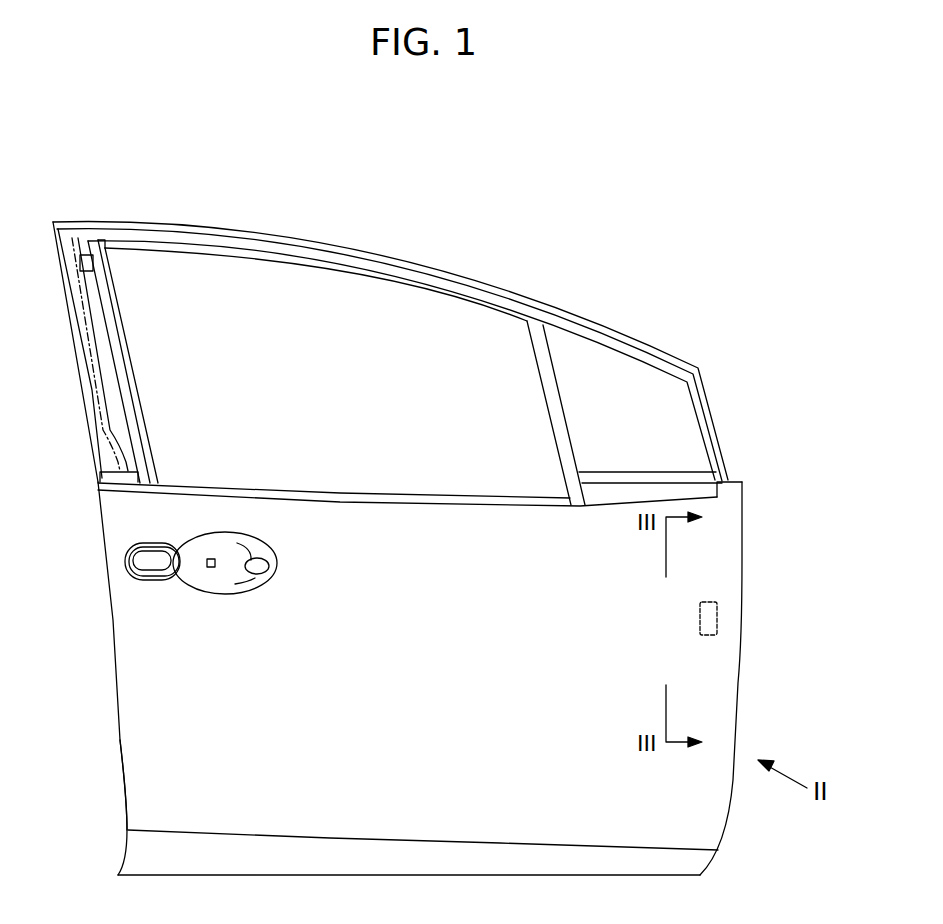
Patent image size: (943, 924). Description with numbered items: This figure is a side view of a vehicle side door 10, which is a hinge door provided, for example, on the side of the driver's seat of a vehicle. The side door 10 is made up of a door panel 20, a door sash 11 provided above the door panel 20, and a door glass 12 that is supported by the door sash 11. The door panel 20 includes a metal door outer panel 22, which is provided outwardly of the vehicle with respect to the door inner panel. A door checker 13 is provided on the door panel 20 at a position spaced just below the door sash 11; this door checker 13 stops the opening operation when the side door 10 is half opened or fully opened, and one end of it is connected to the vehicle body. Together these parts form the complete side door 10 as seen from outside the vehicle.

The vehicle side door 10 is at (755, 328).
The door sash 11 is at (715, 418).
The door glass 12 is at (652, 407).
The door checker 13 is at (717, 615).
The door panel 20 is at (738, 683).
The door outer panel 22 is at (137, 798).